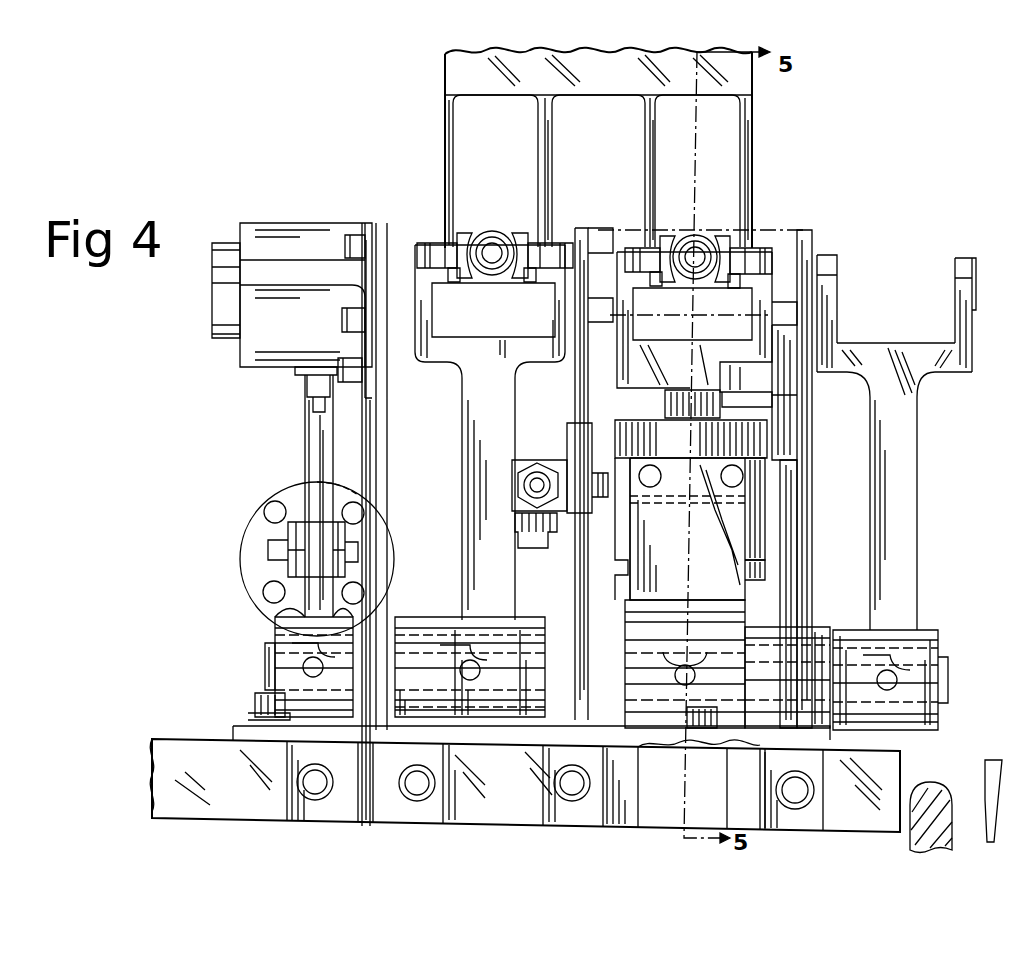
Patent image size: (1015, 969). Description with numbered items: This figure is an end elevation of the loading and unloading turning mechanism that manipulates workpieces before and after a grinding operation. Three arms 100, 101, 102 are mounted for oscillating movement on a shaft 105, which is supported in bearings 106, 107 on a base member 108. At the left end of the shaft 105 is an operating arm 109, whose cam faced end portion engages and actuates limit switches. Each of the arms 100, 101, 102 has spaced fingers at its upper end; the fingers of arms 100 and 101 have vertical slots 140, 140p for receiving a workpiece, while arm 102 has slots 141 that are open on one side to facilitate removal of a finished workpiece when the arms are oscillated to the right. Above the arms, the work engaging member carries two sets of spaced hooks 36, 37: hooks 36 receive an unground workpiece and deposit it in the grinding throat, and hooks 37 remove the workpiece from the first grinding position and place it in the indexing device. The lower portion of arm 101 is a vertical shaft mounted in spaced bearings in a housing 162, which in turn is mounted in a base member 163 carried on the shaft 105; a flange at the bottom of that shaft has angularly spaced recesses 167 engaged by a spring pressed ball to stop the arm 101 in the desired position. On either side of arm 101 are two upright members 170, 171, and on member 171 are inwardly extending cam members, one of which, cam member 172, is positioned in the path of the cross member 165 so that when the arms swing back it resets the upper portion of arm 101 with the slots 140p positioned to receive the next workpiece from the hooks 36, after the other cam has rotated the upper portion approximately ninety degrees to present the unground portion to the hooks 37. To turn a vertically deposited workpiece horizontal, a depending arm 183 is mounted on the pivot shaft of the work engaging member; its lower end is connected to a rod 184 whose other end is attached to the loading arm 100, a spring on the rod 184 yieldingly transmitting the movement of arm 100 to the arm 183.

The hooks 36 is at (538, 188).
The hooks 37 is at (740, 192).
The arm 100 is at (480, 425).
The arm 101 is at (660, 377).
The arm 102 is at (908, 455).
The shaft 105 is at (948, 673).
The bearing 106 is at (410, 622).
The bearing 107 is at (810, 650).
The base member 108 is at (192, 750).
The operating arm 109 is at (317, 430).
The slots 140 is at (418, 243).
The slots 140p is at (617, 253).
The slots 141 is at (828, 256).
The housing 162 is at (613, 547).
The base member 163 is at (630, 598).
The cross member 165 is at (667, 409).
The recesses 167 is at (754, 580).
The upright member 170 is at (578, 378).
The upright member 171 is at (800, 394).
The cam member 172 is at (752, 397).
The depending arm 183 is at (568, 428).
The rod 184 is at (538, 478).